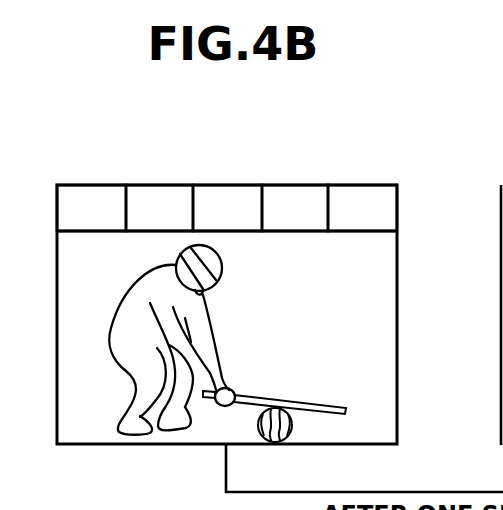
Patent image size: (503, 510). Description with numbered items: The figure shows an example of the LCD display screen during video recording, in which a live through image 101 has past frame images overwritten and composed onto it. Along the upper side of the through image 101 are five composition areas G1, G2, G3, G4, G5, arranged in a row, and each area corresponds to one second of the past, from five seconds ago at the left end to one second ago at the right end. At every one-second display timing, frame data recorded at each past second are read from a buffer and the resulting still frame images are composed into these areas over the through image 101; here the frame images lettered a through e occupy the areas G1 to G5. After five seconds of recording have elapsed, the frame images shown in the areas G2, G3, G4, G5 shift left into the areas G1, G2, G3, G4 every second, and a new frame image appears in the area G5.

The through image 101 is at (397, 312).
The composition area G1 is at (88, 184).
The composition area G2 is at (154, 184).
The composition area G3 is at (224, 184).
The composition area G4 is at (291, 184).
The composition area G5 is at (358, 184).